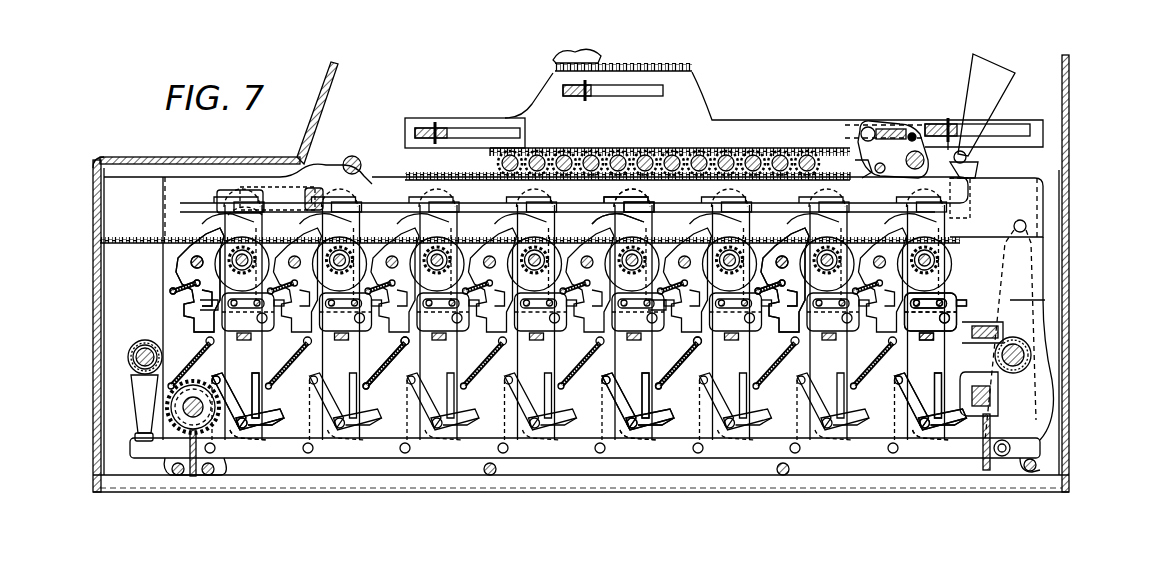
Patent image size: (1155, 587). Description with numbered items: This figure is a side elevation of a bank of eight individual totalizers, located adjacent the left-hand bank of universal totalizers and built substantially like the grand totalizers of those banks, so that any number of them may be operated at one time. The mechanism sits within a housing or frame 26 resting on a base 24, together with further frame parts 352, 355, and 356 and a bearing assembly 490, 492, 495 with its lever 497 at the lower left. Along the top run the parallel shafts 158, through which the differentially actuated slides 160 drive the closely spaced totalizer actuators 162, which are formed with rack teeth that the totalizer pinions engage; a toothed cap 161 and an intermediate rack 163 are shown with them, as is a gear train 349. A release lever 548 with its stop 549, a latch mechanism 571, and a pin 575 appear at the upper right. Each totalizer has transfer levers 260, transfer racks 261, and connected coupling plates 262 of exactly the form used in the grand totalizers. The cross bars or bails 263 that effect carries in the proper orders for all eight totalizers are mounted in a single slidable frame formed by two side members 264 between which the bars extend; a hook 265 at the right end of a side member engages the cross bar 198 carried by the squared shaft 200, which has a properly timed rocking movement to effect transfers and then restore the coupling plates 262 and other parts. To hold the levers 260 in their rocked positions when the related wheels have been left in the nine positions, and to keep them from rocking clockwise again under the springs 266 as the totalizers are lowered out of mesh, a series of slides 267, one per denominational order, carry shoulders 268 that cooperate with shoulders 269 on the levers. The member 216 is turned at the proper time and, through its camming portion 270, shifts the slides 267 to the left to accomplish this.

The base plate 24 is at (600, 488).
The housing frame 26 is at (1067, 148).
The parallel shafts 158 is at (600, 148).
The slides 160 is at (724, 110).
The toothed cap 161 is at (552, 58).
The totalizer actuators 162 is at (530, 302).
The intermediate rack 163 is at (676, 148).
The cross bar 198 is at (982, 326).
The squared shaft 200 is at (964, 386).
The member 216 is at (312, 214).
The transfer levers 260 is at (218, 228).
The transfer racks 261 is at (954, 292).
The coupling plates 262 is at (208, 333).
The cross bars or bails 263 is at (414, 344).
The side members 264 is at (226, 344).
The hook 265 is at (1020, 340).
The springs 266 is at (172, 286).
The slides 267 is at (574, 194).
The shoulders 268 is at (326, 202).
The shoulders 269 is at (412, 230).
The camming portion 270 is at (314, 188).
The gear train 349 is at (752, 152).
The block 352 is at (1045, 202).
The lever 355 is at (1030, 270).
The bushing 356 is at (1022, 352).
The bearing 490 is at (130, 352).
The shaft 492 is at (152, 346).
The bushing 495 is at (135, 360).
The lever 497 is at (171, 425).
The release lever 548 is at (984, 108).
The stop 549 is at (972, 168).
The latch mechanism 571 is at (891, 149).
The pin 575 is at (938, 152).